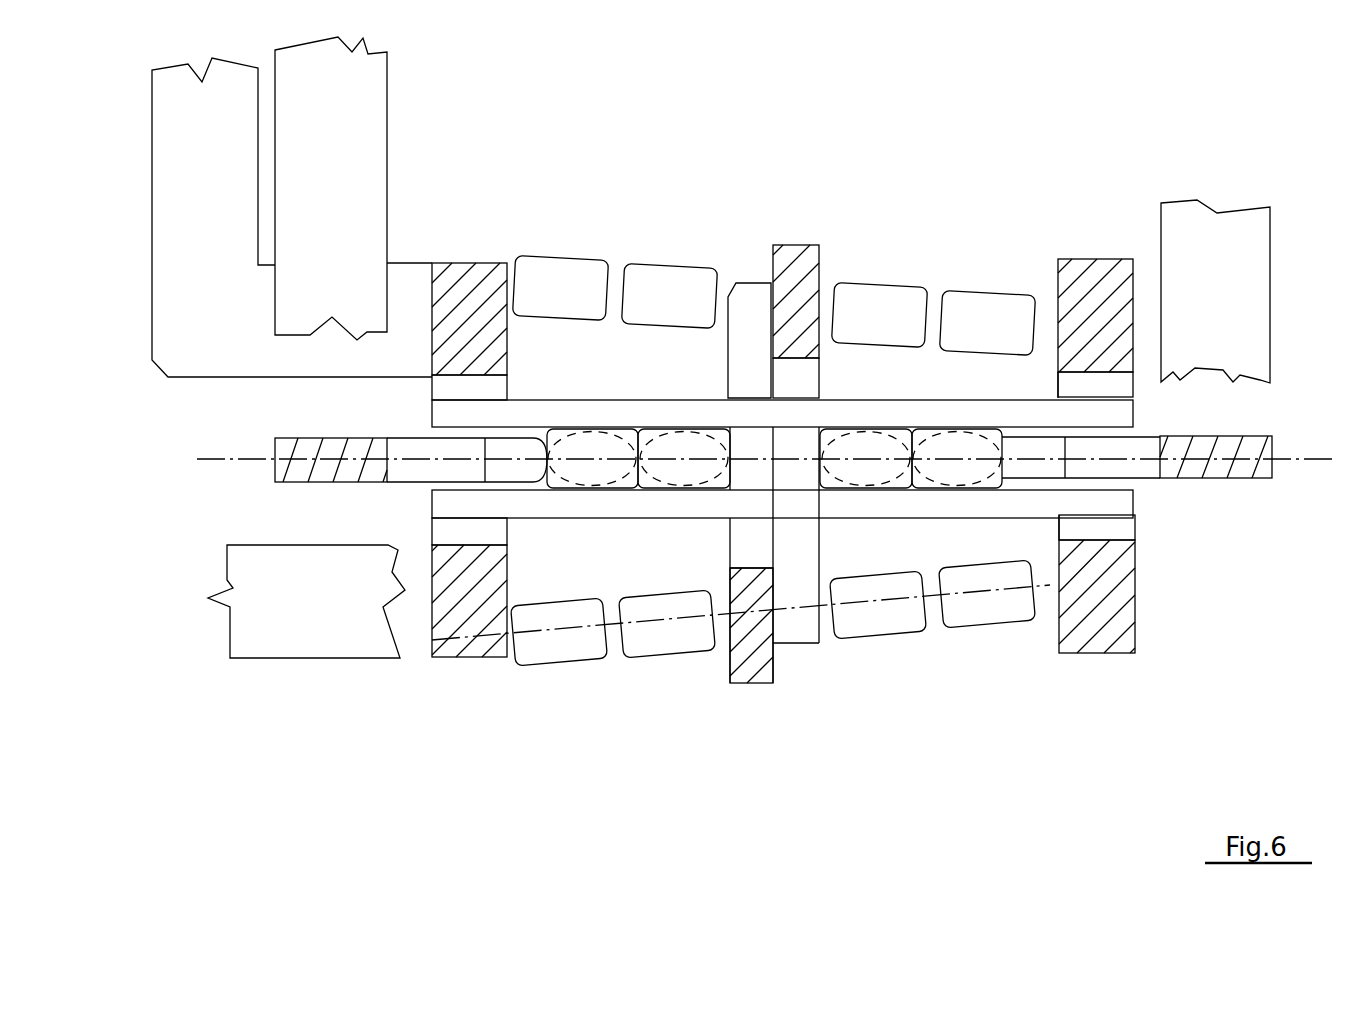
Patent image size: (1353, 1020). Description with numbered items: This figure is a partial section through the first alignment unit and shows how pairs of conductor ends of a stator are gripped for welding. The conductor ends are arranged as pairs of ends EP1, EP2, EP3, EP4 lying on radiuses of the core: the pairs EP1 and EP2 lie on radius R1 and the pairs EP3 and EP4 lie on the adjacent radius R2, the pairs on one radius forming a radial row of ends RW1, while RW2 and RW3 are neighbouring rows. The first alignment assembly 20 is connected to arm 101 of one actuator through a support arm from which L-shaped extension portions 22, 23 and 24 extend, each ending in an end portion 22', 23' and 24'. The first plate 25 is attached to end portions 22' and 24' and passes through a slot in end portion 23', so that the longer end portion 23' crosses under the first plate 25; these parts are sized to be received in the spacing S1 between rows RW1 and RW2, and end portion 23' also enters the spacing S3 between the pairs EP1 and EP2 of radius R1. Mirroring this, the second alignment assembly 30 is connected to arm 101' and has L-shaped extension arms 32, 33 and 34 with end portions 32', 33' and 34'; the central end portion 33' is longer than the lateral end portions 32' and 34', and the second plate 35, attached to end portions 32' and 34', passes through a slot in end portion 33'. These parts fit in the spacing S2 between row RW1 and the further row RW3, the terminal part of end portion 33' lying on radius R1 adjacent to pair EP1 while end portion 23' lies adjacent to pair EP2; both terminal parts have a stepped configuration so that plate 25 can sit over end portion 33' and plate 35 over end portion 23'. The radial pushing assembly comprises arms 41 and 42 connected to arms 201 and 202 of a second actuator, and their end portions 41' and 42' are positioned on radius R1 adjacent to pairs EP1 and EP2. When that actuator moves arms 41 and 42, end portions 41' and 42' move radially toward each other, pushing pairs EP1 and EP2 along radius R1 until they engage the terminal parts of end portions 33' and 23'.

The arm of actuator 101 is at (250, 217).
The arm of actuator 101' is at (306, 653).
The arm of actuator 201 is at (348, 125).
The arm of actuator 202 is at (1218, 248).
The first alignment assembly 20 is at (488, 224).
The extension portion 22 is at (493, 278).
The end portion 22' is at (425, 395).
The extension portion 23 is at (796, 239).
The end portion 23' is at (811, 587).
The extension portion 24 is at (1095, 272).
The end portion 24' is at (1152, 396).
The first plate 25 is at (619, 413).
The second alignment assembly 30 is at (470, 764).
The extension arm 32 is at (468, 645).
The end portion 32' is at (416, 527).
The extension arm 33 is at (756, 673).
The central end portion 33' is at (749, 287).
The extension arm 34 is at (1110, 633).
The end portion 34' is at (1131, 543).
The second plate 35 is at (653, 503).
The arm 41 is at (286, 448).
The end portion 41' is at (473, 504).
The arm 42 is at (1216, 512).
The end portion 42' is at (1056, 495).
The pair of ends EP1 is at (613, 470).
The pair of ends EP2 is at (895, 467).
The pair of ends EP3 is at (607, 688).
The pair of ends EP4 is at (930, 670).
The radius R1 is at (1302, 457).
The radius R2 is at (972, 597).
The row of ends RW1 is at (253, 513).
The row of ends RW2 is at (631, 222).
The row of ends RW3 is at (663, 720).
The spacing S1 is at (1020, 375).
The spacing S2 is at (1025, 543).
The spacing S3 is at (727, 426).